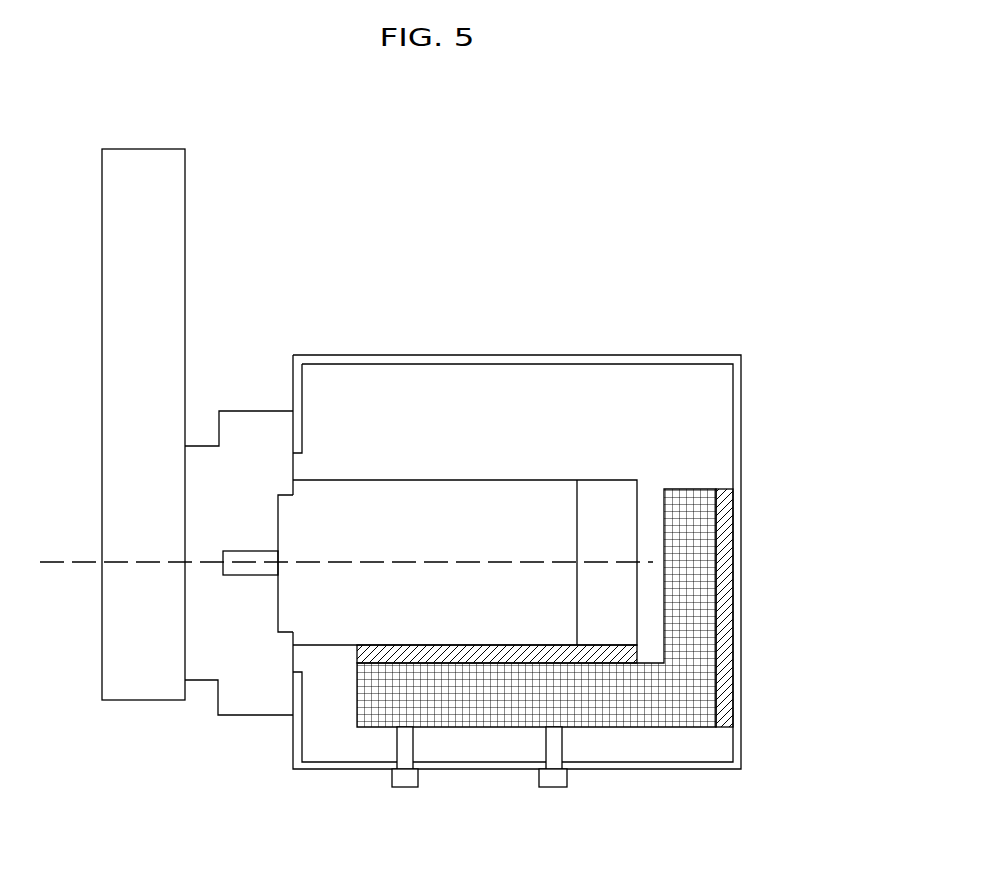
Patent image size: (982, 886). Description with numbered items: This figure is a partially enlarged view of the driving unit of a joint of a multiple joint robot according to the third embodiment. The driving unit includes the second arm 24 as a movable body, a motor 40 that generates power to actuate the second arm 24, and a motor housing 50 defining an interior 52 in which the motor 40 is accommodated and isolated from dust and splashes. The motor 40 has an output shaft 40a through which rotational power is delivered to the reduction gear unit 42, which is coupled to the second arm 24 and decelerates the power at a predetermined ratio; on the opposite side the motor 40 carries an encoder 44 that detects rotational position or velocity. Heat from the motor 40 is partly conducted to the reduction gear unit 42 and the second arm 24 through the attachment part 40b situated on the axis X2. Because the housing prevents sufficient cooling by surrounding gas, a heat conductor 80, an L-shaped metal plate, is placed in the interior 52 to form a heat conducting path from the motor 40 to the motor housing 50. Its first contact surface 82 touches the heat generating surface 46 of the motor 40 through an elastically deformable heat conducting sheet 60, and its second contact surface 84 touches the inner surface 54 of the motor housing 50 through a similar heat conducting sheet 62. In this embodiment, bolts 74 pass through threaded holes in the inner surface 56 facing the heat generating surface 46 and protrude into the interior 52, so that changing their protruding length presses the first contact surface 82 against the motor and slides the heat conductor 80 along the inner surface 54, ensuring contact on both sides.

The second arm 24 is at (186, 235).
The reduction gear unit 42 is at (240, 411).
The motor housing 50 is at (541, 355).
The interior 52 is at (322, 410).
The motor 40 is at (432, 480).
The output shaft 40a is at (248, 575).
The attachment part 40b is at (285, 617).
The encoder 44 is at (602, 480).
The axis X2 is at (62, 560).
The heat conductor 80 is at (657, 727).
The first contact surface 82 is at (543, 658).
The second contact surface 84 is at (717, 568).
The heat conducting sheet 62 is at (727, 489).
The inner surface 54 is at (728, 693).
The inner surface 56 is at (703, 752).
The heat generating surface 46 is at (450, 645).
The heat conducting sheet 60 is at (353, 653).
The bolts 74 is at (388, 780).